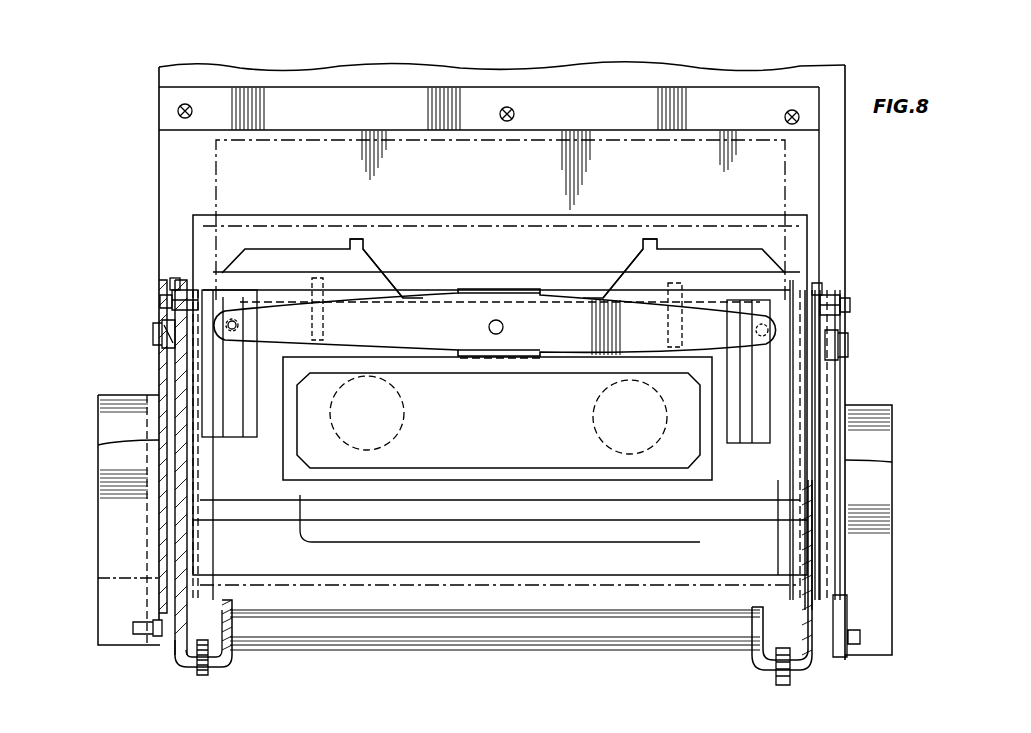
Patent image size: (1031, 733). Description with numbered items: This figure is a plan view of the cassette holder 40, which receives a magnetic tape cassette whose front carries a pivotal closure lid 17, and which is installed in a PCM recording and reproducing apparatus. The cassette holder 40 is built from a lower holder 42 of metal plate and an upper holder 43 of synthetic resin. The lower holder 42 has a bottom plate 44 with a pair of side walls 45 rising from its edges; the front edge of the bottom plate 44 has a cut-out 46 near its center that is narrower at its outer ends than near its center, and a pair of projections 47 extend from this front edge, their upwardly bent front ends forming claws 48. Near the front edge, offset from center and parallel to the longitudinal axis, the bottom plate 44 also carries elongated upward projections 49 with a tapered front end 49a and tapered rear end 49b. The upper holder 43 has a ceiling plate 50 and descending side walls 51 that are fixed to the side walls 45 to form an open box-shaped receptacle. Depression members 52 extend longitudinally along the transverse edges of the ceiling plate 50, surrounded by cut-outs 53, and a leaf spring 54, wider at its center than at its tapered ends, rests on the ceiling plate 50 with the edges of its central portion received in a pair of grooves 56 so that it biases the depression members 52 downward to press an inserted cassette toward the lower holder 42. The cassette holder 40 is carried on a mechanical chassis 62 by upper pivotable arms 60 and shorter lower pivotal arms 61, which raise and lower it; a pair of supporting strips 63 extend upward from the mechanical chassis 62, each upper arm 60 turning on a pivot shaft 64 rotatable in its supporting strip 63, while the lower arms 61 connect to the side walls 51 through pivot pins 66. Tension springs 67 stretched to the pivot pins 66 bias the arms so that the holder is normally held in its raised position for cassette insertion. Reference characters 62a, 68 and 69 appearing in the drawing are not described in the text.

The pivotal closure lid 17 is at (543, 152).
The cassette holder 40 is at (846, 262).
The lower holder 42 is at (337, 249).
The upper holder 43 is at (821, 284).
The bottom plate 44 is at (735, 290).
The side walls 45 is at (105, 400).
The cut-out 46 is at (388, 292).
The projections 47 is at (366, 250).
The claws 48 is at (356, 239).
The elongated upward projections 49 is at (495, 323).
The tapered front end 49a is at (503, 268).
The tapered rear end 49b is at (668, 340).
The ceiling plate 50 is at (200, 278).
The side walls 51 is at (195, 383).
The depression members 52 is at (692, 435).
The cut-outs 53 is at (180, 286).
The leaf spring 54 is at (554, 345).
The grooves 56 is at (480, 292).
The upper pivotable arms 60 is at (112, 462).
The lower pivotal arms 61 is at (108, 432).
The mechanical chassis 62 is at (818, 78).
The pivot pin 62a is at (238, 326).
The supporting strips 63 is at (126, 560).
The pivot shaft 64 is at (330, 632).
The pivot pins 66 is at (153, 331).
The tension springs 67 is at (153, 355).
The rod 68 is at (483, 567).
The rod 69 is at (662, 587).